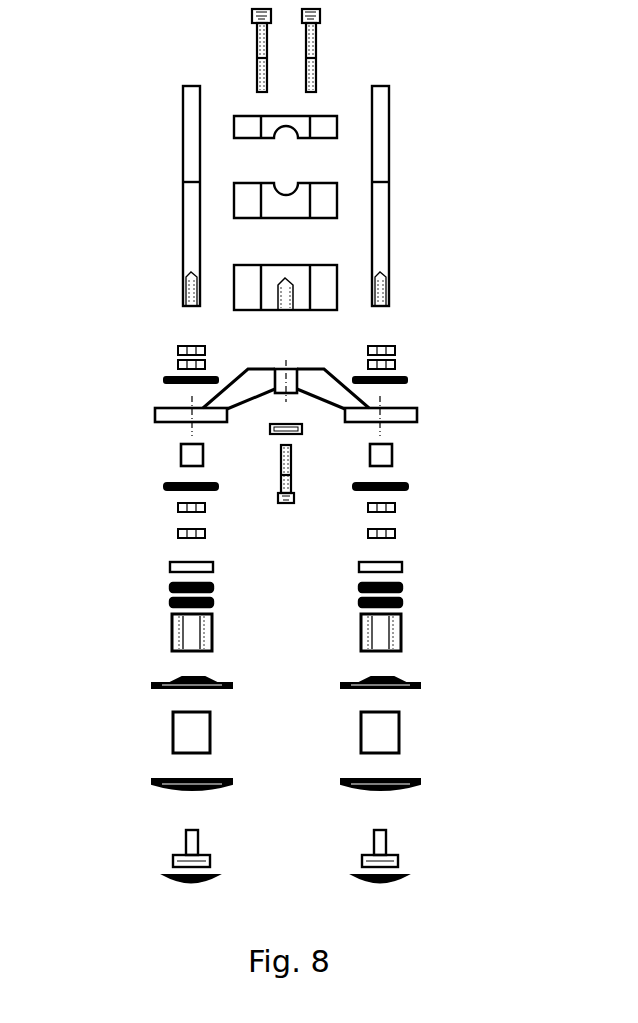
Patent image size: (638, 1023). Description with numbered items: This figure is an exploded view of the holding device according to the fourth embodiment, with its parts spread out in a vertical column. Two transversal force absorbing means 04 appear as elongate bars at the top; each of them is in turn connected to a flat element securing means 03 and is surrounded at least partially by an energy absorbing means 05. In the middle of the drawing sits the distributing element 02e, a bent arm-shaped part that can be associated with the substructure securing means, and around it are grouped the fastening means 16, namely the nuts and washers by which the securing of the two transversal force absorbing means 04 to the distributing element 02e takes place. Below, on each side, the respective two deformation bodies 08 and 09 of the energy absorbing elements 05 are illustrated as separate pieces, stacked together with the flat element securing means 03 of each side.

The transversal force absorbing means 04 is at (172, 102).
The fastening means 16 is at (400, 353).
The distributing element 02e is at (152, 415).
The deformation body 09 is at (355, 588).
The deformation body 08 is at (355, 633).
The energy absorbing means 05 is at (128, 611).
The flat element securing means 03 is at (355, 730).